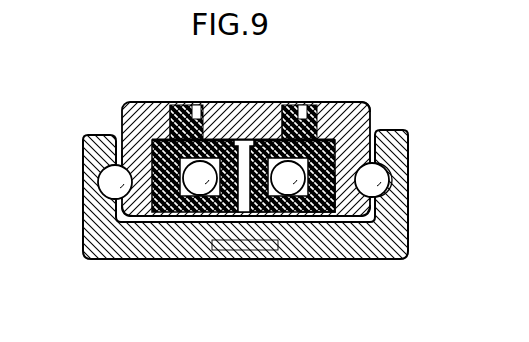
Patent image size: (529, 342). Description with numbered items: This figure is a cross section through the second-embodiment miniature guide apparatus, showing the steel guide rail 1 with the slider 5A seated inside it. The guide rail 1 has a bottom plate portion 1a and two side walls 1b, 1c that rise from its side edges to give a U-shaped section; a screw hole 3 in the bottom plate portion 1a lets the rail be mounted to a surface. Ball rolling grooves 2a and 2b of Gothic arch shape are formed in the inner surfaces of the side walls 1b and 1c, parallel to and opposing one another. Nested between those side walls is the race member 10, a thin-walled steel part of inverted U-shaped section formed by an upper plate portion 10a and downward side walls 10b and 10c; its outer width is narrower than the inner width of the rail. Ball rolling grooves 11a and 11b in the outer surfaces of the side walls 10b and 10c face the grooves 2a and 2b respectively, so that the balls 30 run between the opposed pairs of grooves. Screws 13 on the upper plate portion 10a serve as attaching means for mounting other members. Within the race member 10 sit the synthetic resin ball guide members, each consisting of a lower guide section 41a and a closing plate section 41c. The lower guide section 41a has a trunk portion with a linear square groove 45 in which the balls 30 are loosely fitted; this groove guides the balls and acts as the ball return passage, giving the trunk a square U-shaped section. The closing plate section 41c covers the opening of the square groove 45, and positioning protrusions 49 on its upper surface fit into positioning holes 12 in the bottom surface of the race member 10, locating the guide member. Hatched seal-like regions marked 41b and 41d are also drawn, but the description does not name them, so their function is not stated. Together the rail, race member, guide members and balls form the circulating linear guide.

The guide rail 1 is at (400, 243).
The bottom plate portion 1a is at (166, 254).
The side wall 1b is at (86, 140).
The side wall 1c is at (407, 137).
The ball rolling groove 2a is at (100, 172).
The ball rolling groove 2b is at (388, 167).
The screw hole 3 is at (264, 253).
The slider 5A is at (368, 105).
The race member 10 is at (347, 103).
The upper plate portion 10a is at (222, 105).
The side wall 10b is at (122, 215).
The side wall 10c is at (371, 213).
The ball rolling groove 11a is at (121, 158).
The ball rolling groove 11b is at (372, 150).
The positioning holes 12 is at (192, 105).
The screws 13 is at (242, 115).
The balls 30 is at (108, 185).
The lower guide section 41a is at (162, 212).
The seal member 41b is at (345, 217).
The closing plate section 41c is at (148, 130).
The seal member 41d is at (272, 103).
The square groove 45 is at (213, 218).
The positioning protrusions 49 is at (200, 105).